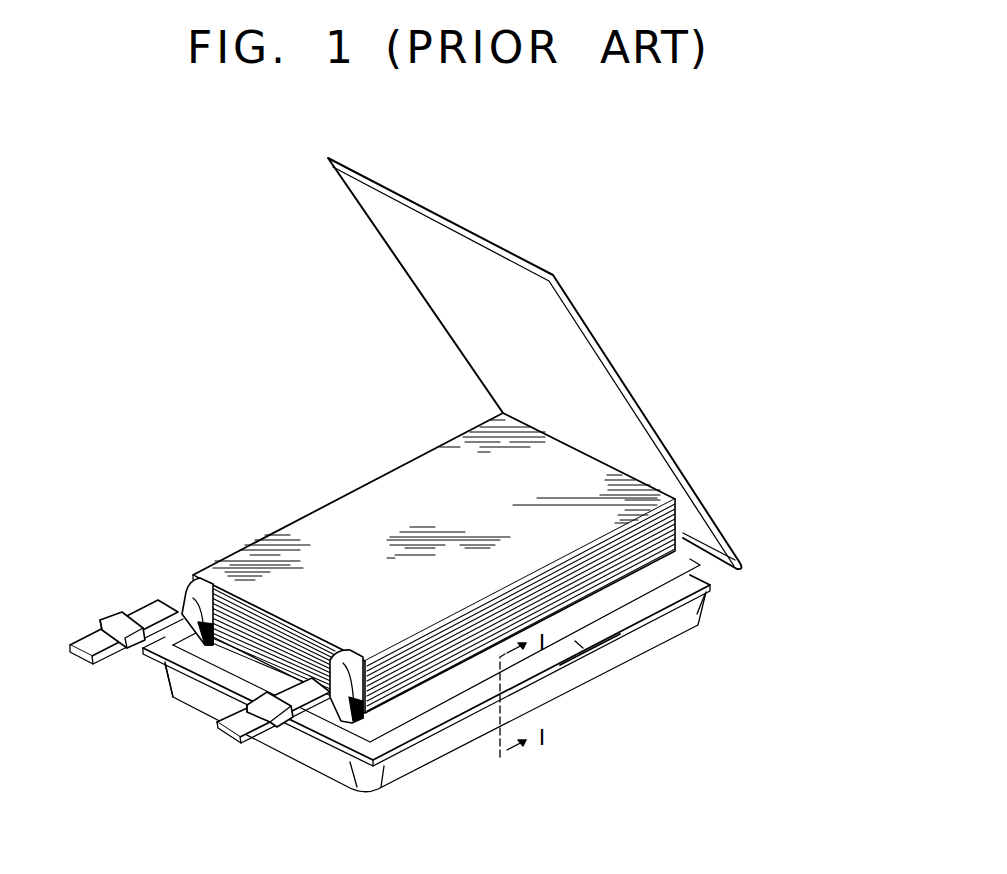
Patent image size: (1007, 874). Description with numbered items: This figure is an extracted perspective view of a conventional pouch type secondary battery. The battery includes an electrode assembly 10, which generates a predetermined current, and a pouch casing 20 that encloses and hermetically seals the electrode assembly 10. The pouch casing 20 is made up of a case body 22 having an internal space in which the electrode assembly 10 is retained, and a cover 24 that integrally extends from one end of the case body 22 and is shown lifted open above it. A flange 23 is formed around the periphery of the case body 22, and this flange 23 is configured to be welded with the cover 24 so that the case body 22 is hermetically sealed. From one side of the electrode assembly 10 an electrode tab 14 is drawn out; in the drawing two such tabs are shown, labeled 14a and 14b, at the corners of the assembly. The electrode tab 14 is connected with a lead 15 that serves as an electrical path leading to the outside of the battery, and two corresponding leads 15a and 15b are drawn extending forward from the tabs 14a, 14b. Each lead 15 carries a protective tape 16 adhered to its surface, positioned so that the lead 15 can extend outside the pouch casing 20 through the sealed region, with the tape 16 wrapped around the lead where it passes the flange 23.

The electrode assembly 10 is at (353, 502).
The electrode tab 14 is at (148, 491).
The first electrode tab 14a is at (195, 592).
The second electrode tab 14b is at (341, 666).
The lead 15 is at (65, 736).
The first electrode lead 15a is at (84, 660).
The second electrode lead 15b is at (230, 726).
The protective tape 16 is at (120, 617).
The pouch casing 20 is at (819, 513).
The case body 22 is at (692, 608).
The flange 23 is at (587, 634).
The cover 24 is at (698, 514).